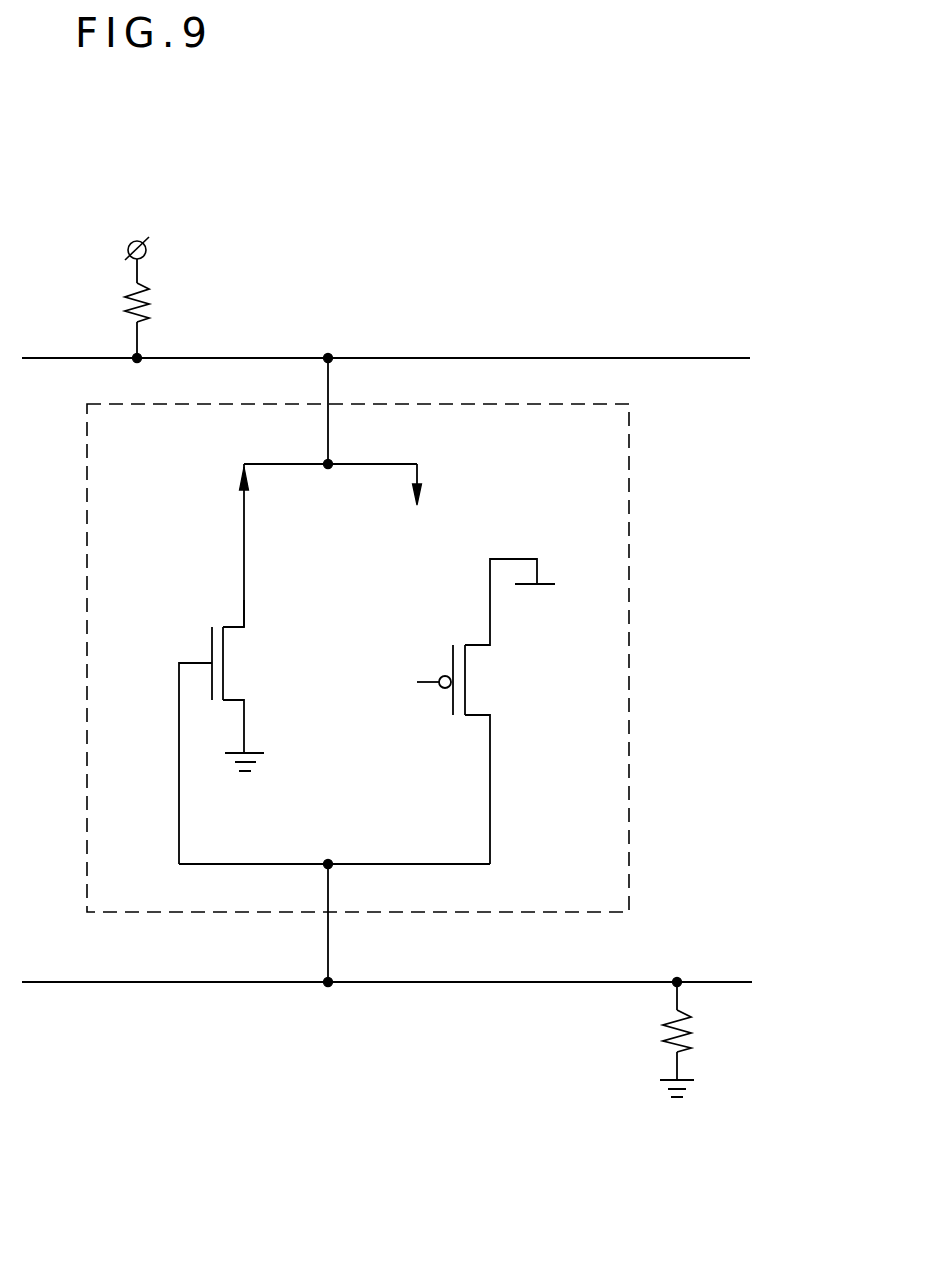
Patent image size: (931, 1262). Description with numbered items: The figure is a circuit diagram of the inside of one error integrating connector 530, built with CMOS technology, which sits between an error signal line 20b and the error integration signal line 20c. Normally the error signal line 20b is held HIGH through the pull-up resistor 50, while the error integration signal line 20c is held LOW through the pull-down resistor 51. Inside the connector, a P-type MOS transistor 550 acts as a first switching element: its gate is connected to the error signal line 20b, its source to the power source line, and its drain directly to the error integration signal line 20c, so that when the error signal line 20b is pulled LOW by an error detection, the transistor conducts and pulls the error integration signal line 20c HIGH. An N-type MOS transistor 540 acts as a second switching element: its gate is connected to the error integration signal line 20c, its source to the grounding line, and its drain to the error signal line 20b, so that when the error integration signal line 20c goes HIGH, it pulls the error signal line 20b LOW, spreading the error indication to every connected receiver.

The pull-up resistor 50 is at (150, 307).
The error signal line 20b is at (377, 358).
The error integrating connector 530 is at (631, 462).
The N-type MOS transistor 540 is at (212, 640).
The P-type MOS transistor 550 is at (480, 714).
The error integration signal line 20c is at (173, 985).
The pull-down resistor 51 is at (692, 1040).